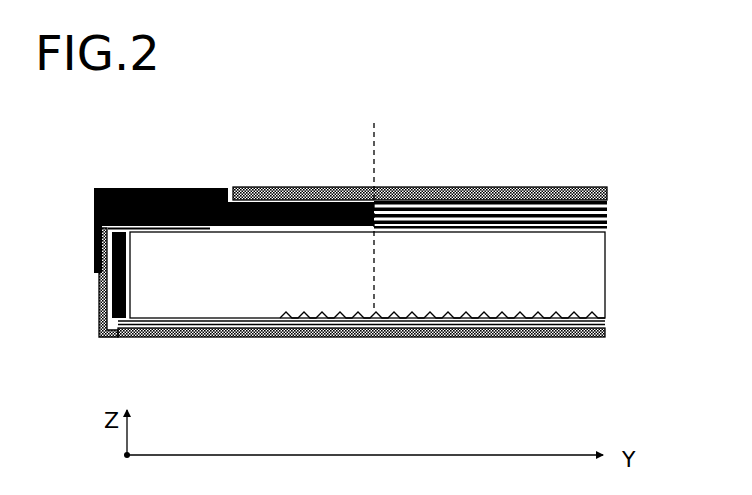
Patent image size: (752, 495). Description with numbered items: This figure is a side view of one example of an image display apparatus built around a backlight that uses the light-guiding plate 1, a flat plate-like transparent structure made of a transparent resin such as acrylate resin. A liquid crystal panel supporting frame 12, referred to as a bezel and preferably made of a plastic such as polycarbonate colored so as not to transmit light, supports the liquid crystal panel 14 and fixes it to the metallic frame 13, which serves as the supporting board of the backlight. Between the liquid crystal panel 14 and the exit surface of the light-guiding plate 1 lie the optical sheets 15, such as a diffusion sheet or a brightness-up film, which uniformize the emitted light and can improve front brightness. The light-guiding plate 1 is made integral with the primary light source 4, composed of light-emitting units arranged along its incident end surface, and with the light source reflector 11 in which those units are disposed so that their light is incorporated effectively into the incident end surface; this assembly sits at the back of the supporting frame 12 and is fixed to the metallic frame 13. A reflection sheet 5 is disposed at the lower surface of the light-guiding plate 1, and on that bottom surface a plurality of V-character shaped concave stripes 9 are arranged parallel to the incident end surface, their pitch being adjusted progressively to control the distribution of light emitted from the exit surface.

The light-guiding plate 1 is at (598, 272).
The primary light source 4 is at (104, 304).
The reflection sheet 5 is at (608, 321).
The V-character shaped concave stripes 9 is at (415, 318).
The light source reflector 11 is at (123, 330).
The supporting frame 12 is at (166, 186).
The metallic frame 13 is at (193, 335).
The liquid crystal panel 14 is at (497, 187).
The optical sheet 15 is at (611, 200).